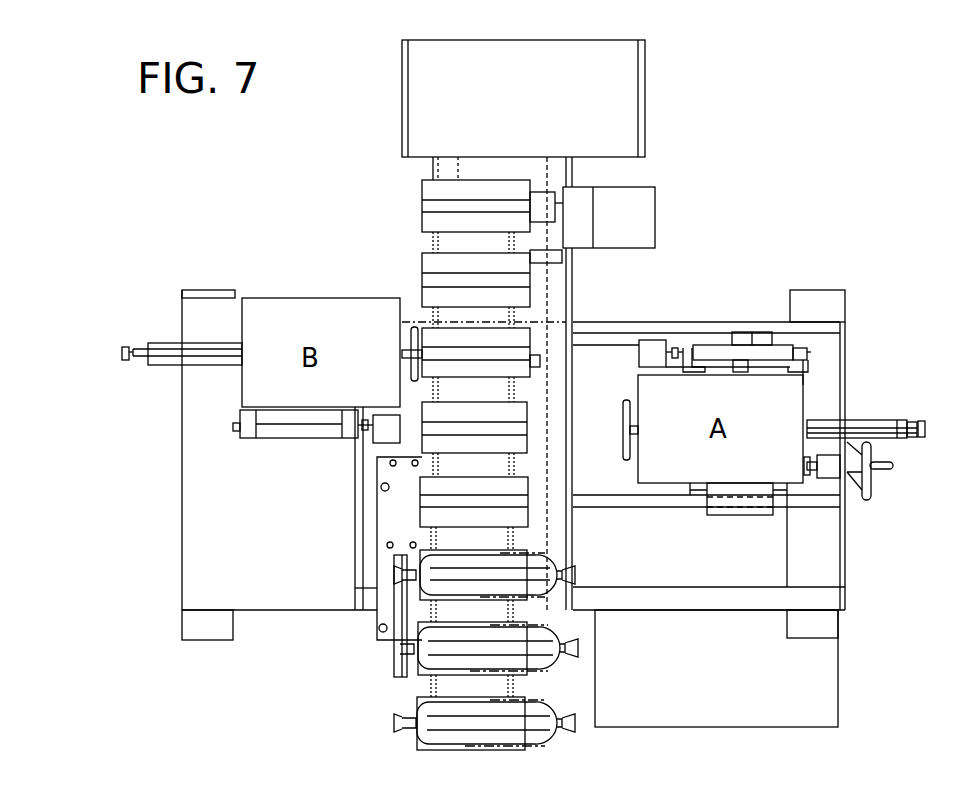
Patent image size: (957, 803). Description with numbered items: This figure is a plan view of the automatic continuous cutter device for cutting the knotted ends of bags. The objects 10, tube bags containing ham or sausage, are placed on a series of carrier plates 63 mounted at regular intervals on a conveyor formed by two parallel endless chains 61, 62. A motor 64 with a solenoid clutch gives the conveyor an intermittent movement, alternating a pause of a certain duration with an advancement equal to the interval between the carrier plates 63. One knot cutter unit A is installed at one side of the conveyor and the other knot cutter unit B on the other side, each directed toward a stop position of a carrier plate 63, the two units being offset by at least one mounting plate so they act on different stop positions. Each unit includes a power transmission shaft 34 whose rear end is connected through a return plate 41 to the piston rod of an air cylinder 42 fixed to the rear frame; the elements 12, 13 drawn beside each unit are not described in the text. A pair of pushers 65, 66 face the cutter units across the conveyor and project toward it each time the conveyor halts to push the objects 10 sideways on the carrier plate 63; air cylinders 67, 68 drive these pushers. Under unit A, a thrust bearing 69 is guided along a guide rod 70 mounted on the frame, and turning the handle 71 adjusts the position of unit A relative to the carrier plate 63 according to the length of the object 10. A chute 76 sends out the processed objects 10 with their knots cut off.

The object 10 is at (532, 717).
The adjusting handle 12 is at (420, 373).
The handwheel 13 is at (413, 326).
The power transmission shaft 34 is at (204, 347).
The return plate 41 is at (125, 348).
The air cylinder 42 is at (159, 344).
The endless chain 61 is at (432, 683).
The endless chain 62 is at (514, 684).
The carrier plate 63 is at (522, 517).
The motor 64 is at (640, 220).
The pusher 65 is at (653, 340).
The pusher 66 is at (387, 418).
The air cylinder 67 is at (762, 350).
The air cylinder 68 is at (296, 430).
The thrust bearing 69 is at (733, 515).
The guide rod 70 is at (660, 500).
The handle 71 is at (870, 480).
The chute 76 is at (632, 117).